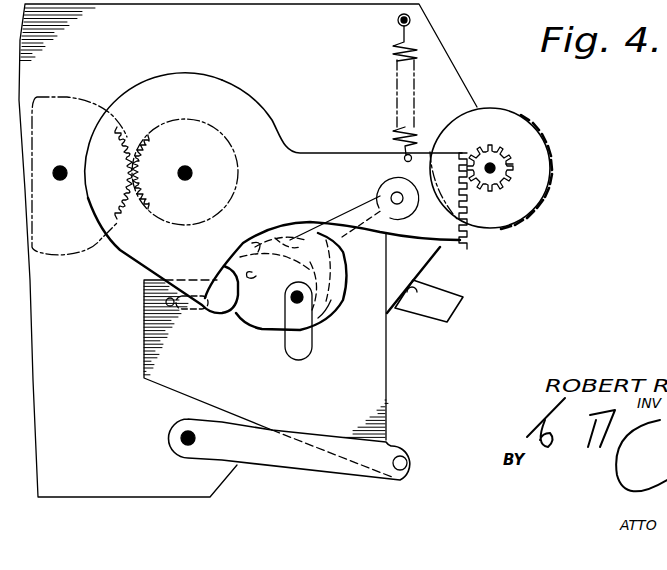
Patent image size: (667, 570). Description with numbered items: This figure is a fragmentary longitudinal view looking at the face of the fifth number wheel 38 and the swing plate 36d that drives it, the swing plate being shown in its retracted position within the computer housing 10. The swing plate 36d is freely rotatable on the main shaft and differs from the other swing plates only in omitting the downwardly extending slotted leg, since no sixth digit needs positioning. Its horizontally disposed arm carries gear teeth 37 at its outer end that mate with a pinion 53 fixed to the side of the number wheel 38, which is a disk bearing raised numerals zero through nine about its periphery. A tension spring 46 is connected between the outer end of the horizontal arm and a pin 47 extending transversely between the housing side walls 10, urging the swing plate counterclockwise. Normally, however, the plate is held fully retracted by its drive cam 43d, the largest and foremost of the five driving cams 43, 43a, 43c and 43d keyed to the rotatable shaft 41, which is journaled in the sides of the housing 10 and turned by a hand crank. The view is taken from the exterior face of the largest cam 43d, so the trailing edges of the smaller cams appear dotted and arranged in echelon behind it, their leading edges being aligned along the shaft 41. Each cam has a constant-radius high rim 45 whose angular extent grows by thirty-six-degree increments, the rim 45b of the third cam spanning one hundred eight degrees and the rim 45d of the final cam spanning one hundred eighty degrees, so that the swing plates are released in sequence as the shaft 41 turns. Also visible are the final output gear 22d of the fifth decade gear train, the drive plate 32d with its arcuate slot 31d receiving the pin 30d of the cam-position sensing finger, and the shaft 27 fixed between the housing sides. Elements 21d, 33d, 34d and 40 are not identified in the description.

The computer housing 10 is at (113, 484).
The gear segment plate 21d is at (76, 97).
The final output gear 22d is at (186, 118).
The shaft 27 is at (183, 440).
The pin 30d is at (166, 303).
The arcuate slot 31d is at (185, 307).
The drive plate 32d is at (389, 390).
The link 33d is at (315, 470).
The pivot 34d is at (392, 194).
The swing plate 36d is at (264, 116).
The gear teeth 37 is at (468, 242).
The number wheel 38 is at (529, 109).
The pinion shaft 40 is at (500, 169).
The shaft 41 is at (291, 300).
The drive cam 43 is at (355, 284).
The second drive cam 43a is at (268, 246).
The fourth drive cam 43c is at (318, 318).
The final drive cam 43d is at (330, 292).
The high rim 45 is at (221, 268).
The high rim of third drive cam 45b is at (280, 232).
The high rim of final drive cam 45d is at (342, 237).
The tension spring 46 is at (415, 50).
The pin 47 is at (411, 18).
The pinion 53 is at (513, 164).